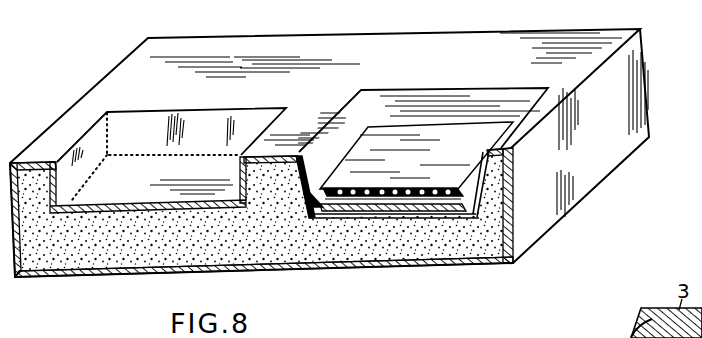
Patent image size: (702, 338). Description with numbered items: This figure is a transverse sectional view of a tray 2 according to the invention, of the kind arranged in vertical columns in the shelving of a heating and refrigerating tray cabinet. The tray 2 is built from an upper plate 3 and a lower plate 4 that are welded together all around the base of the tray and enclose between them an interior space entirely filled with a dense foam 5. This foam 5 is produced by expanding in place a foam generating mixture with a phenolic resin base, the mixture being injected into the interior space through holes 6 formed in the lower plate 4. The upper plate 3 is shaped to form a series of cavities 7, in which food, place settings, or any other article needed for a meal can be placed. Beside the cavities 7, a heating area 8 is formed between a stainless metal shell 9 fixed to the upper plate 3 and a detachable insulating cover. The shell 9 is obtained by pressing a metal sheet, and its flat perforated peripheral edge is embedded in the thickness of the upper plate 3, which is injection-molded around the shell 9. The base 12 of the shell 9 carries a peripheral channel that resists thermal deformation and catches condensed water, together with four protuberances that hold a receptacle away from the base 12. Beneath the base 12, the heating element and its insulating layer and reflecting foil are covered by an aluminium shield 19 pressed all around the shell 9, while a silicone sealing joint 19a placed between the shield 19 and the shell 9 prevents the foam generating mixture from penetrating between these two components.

The tray 2 is at (652, 66).
The upper plate 3 is at (33, 164).
The lower plate 4 is at (108, 270).
The dense foam 5 is at (50, 252).
The holes 6 is at (128, 268).
The cavities 7 is at (150, 133).
The heating area 8 is at (407, 108).
The stainless metal shell 9 is at (512, 165).
The base 12 is at (417, 185).
The aluminium shield 19 is at (470, 206).
The silicone sealing joint 19a is at (309, 165).